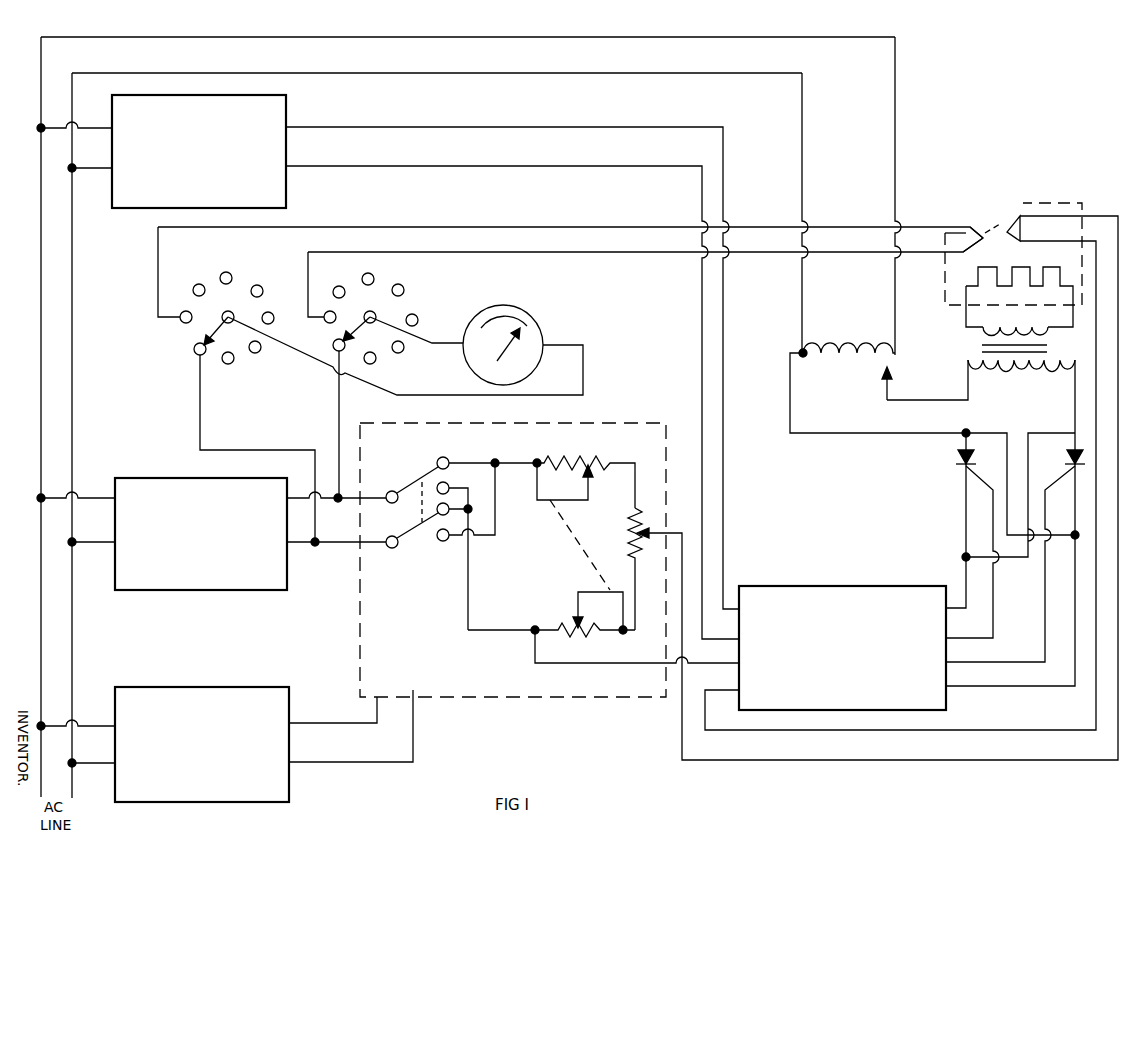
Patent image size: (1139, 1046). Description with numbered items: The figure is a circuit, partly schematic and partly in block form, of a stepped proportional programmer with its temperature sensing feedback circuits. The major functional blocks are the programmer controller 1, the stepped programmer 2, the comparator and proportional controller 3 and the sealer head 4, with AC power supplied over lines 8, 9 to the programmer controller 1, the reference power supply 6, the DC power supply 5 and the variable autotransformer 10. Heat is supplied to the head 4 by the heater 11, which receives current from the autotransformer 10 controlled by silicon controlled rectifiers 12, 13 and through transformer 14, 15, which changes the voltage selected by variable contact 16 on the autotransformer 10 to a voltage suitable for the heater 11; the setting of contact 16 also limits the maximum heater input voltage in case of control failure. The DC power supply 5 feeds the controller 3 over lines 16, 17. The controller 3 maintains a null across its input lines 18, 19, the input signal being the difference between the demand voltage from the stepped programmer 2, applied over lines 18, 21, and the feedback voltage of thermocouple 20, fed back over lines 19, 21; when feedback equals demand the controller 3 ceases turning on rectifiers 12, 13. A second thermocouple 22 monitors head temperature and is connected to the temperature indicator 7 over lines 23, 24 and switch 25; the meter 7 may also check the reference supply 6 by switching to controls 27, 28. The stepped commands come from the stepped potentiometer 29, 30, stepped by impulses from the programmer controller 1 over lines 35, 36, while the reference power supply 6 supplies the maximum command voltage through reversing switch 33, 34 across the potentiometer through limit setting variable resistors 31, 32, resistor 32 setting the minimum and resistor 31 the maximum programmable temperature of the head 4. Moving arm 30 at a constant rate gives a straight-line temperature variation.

The program controller 1 is at (173, 686).
The stepped programmer 2 is at (485, 700).
The comparator and proportional controller 3 is at (760, 586).
The sealer head 4 is at (945, 306).
The DC power supply 5 is at (286, 195).
The reference power supply 6 is at (232, 592).
The temperature indicator 7 is at (541, 331).
The AC power line 8 is at (40, 411).
The AC power line 9 is at (74, 413).
The variable autotransformer 10 is at (833, 366).
The heater 11 is at (966, 278).
The silicon controlled rectifier 12 is at (957, 458).
The silicon controlled rectifier 13 is at (1068, 460).
The transformer winding 14 is at (968, 363).
The transformer winding 15 is at (983, 333).
The variable contact / DC power line 16 is at (700, 327).
The DC power line 17 is at (726, 329).
The input line 18 is at (590, 663).
The input line 19 is at (713, 690).
The thermocouple 20 is at (1007, 231).
The line 21 is at (680, 730).
The second thermocouple 22 is at (980, 239).
The line 23 is at (612, 253).
The line 24 is at (608, 226).
The switch 25 is at (232, 307).
The control 27 is at (195, 352).
The control 28 is at (334, 345).
The stepped potentiometer 29 is at (630, 530).
The potentiometer arm 30 is at (652, 538).
The limit setting variable resistor 31 is at (586, 464).
The limit setting variable resistor 32 is at (582, 634).
The reversing switch 33 is at (408, 487).
The reversing switch 34 is at (405, 540).
The line 35 is at (304, 722).
The line 36 is at (304, 763).